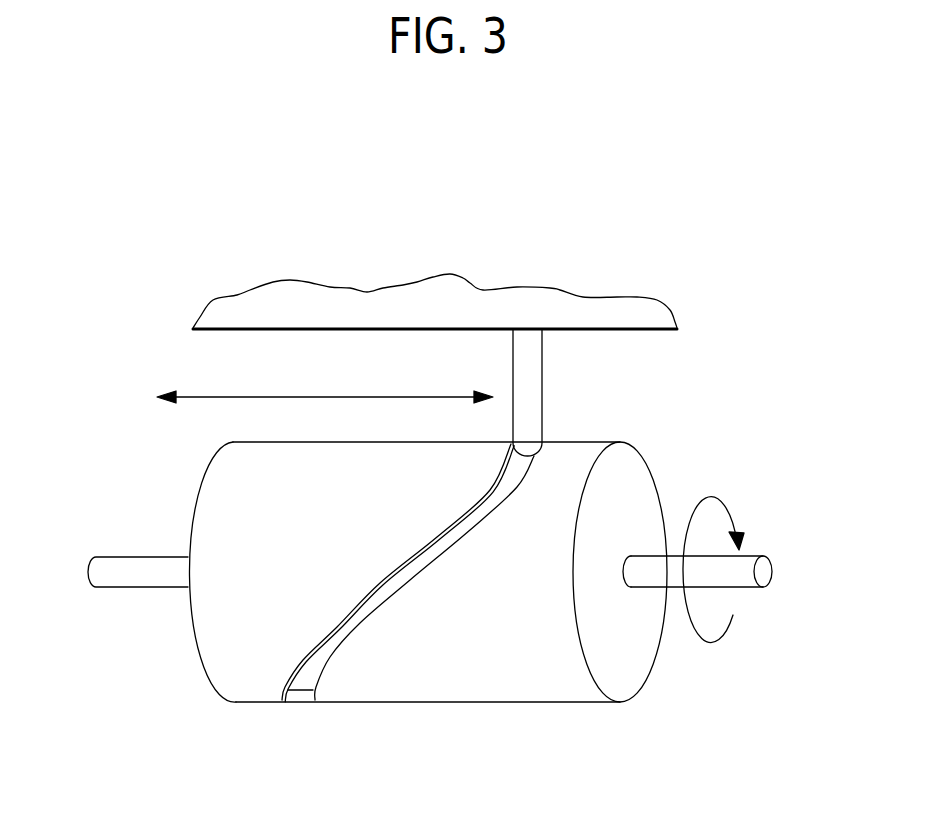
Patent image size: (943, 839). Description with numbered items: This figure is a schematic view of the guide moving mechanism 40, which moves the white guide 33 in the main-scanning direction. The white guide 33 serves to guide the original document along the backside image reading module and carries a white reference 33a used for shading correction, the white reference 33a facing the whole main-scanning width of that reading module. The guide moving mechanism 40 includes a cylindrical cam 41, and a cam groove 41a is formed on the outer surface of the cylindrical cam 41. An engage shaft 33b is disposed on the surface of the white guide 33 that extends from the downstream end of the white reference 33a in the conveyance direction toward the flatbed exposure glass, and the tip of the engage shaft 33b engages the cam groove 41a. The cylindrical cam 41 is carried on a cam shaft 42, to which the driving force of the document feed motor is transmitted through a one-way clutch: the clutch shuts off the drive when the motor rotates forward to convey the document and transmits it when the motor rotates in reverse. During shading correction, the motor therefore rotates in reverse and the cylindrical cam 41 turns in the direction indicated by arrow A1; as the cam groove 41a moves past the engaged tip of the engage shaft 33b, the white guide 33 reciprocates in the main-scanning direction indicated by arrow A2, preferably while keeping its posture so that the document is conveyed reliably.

The white guide 33 is at (492, 338).
The white reference 33a is at (416, 307).
The engage shaft 33b is at (635, 330).
The guide moving mechanism 40 is at (439, 622).
The cylindrical cam 41 is at (456, 602).
The cam groove 41a is at (318, 668).
The cam shaft 42 is at (750, 560).
The arrow A1 is at (718, 558).
The arrow A2 is at (325, 381).